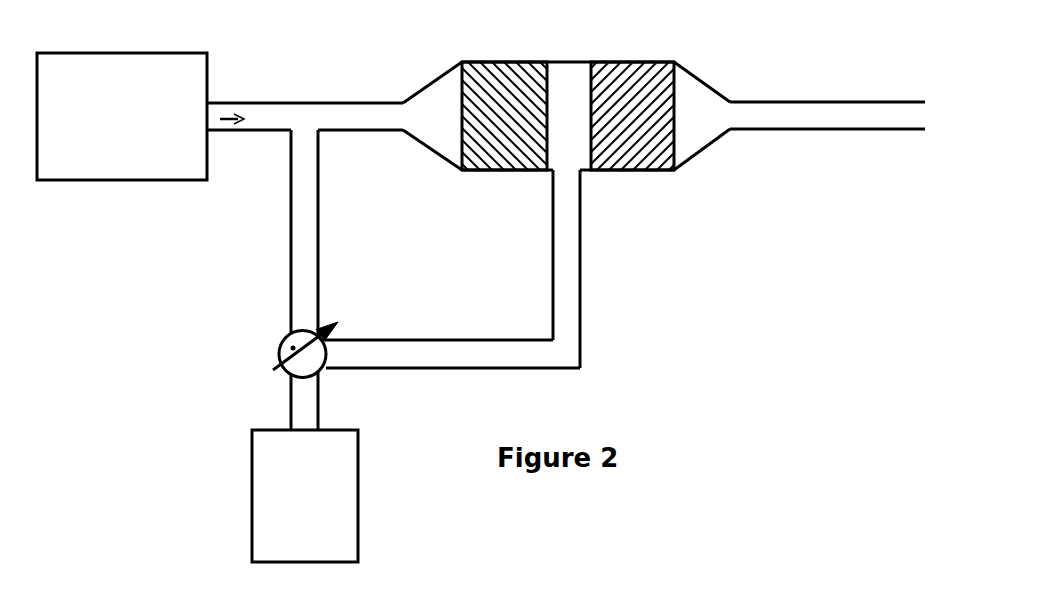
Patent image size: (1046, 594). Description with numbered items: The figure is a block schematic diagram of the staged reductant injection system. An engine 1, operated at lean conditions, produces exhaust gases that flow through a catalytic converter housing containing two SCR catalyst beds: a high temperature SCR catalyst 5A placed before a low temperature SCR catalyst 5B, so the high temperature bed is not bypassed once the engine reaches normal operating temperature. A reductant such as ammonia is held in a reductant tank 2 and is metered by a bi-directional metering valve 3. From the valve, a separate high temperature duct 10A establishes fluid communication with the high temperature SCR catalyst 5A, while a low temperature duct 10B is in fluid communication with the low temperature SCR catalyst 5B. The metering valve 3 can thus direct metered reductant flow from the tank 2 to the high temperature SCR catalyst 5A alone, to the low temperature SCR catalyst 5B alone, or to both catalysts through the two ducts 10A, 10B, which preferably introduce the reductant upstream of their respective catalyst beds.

The engine 1 is at (110, 52).
The reductant tank 2 is at (360, 447).
The metering valve 3 is at (285, 337).
The high temperature SCR catalyst 5A is at (613, 60).
The low temperature SCR catalyst 5B is at (482, 60).
The high temperature duct 10A is at (582, 292).
The low temperature duct 10B is at (320, 230).